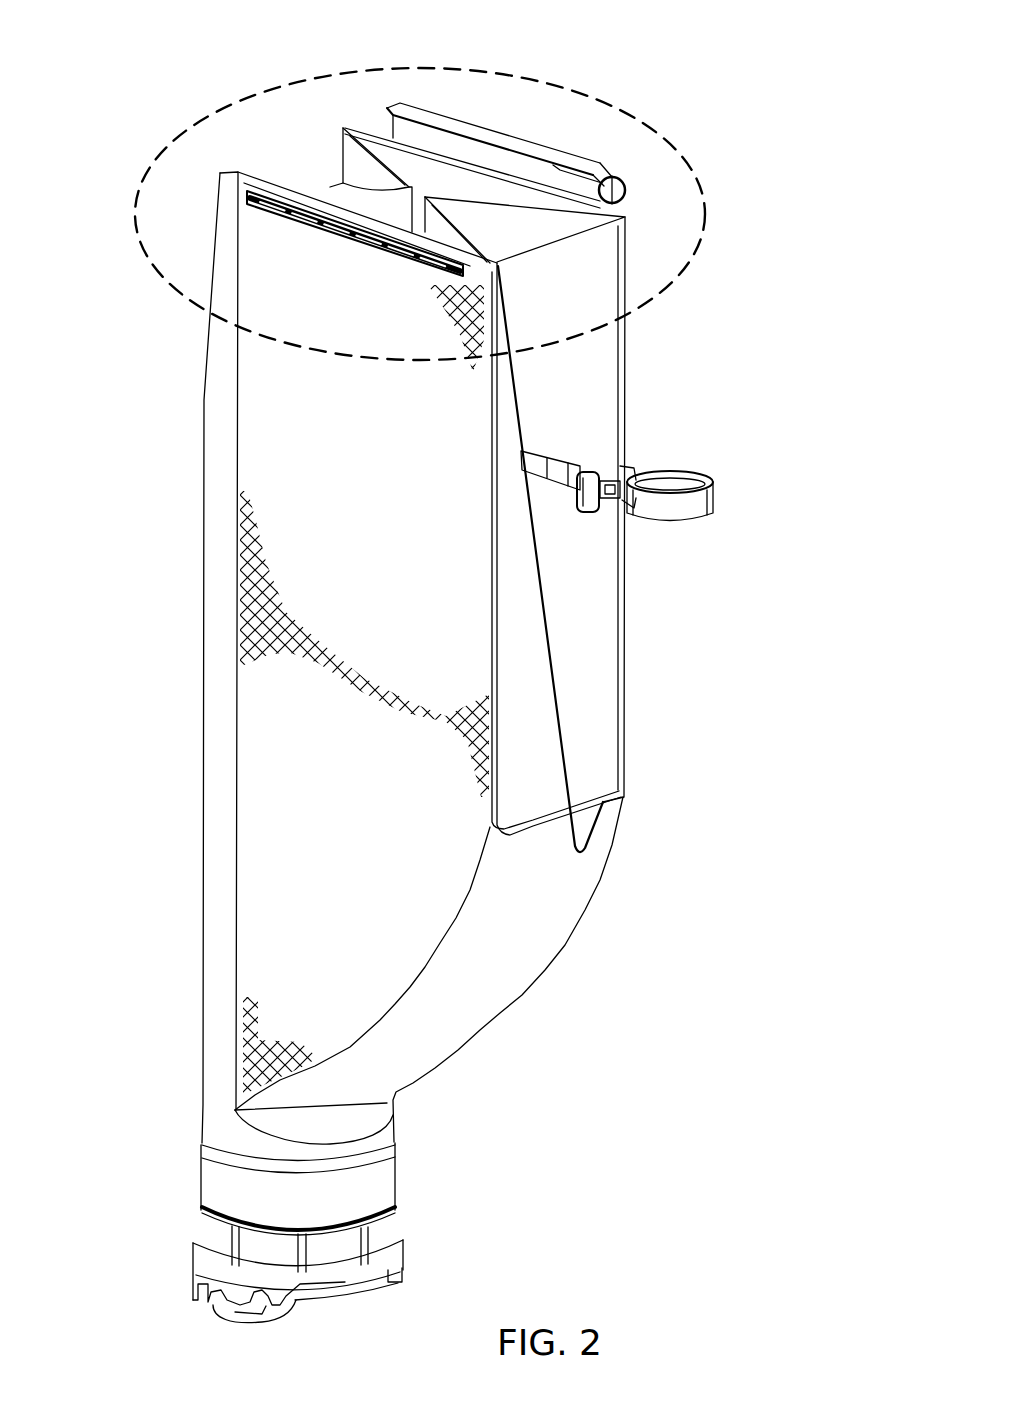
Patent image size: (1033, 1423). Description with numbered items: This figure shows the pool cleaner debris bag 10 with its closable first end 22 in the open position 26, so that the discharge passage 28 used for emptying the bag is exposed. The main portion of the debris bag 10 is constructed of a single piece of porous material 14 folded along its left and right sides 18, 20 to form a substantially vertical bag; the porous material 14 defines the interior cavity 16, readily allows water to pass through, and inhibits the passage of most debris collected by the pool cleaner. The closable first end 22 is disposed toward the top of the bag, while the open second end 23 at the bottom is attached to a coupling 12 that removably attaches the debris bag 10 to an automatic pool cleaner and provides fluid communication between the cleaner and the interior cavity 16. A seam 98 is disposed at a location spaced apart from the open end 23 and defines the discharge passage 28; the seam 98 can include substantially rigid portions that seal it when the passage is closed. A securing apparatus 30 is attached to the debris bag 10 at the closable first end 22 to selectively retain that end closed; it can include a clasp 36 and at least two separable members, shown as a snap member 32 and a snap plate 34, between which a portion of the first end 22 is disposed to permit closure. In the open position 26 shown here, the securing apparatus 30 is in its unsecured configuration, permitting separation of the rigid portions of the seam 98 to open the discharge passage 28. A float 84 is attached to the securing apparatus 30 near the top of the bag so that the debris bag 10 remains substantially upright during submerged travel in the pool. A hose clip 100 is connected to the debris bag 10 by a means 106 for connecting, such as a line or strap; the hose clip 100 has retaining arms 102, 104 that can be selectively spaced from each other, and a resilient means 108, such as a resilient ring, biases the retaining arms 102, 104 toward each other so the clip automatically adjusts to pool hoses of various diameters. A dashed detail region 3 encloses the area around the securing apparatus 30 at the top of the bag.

The detail view region 3 is at (158, 148).
The pool cleaner debris bag 10 is at (722, 125).
The coupling 12 is at (281, 1254).
The porous material 14 is at (394, 601).
The interior cavity 16 is at (447, 188).
The left side 18 is at (183, 846).
The right side 20 is at (592, 524).
The closable first end 22 is at (279, 142).
The open second end 23 is at (328, 1298).
The open position 26 is at (505, 117).
The discharge passage 28 is at (356, 115).
The securing apparatus 30 is at (655, 238).
The snap member 32 is at (585, 166).
The snap plate 34 is at (368, 238).
The clasp 36 is at (468, 110).
The float 84 is at (625, 190).
The seam 98 is at (235, 166).
The hose clip 100 is at (672, 453).
The retaining arm 102 is at (702, 501).
The retaining arm 104 is at (695, 468).
The means for connecting 106 is at (540, 458).
The resilient means 108 is at (628, 514).